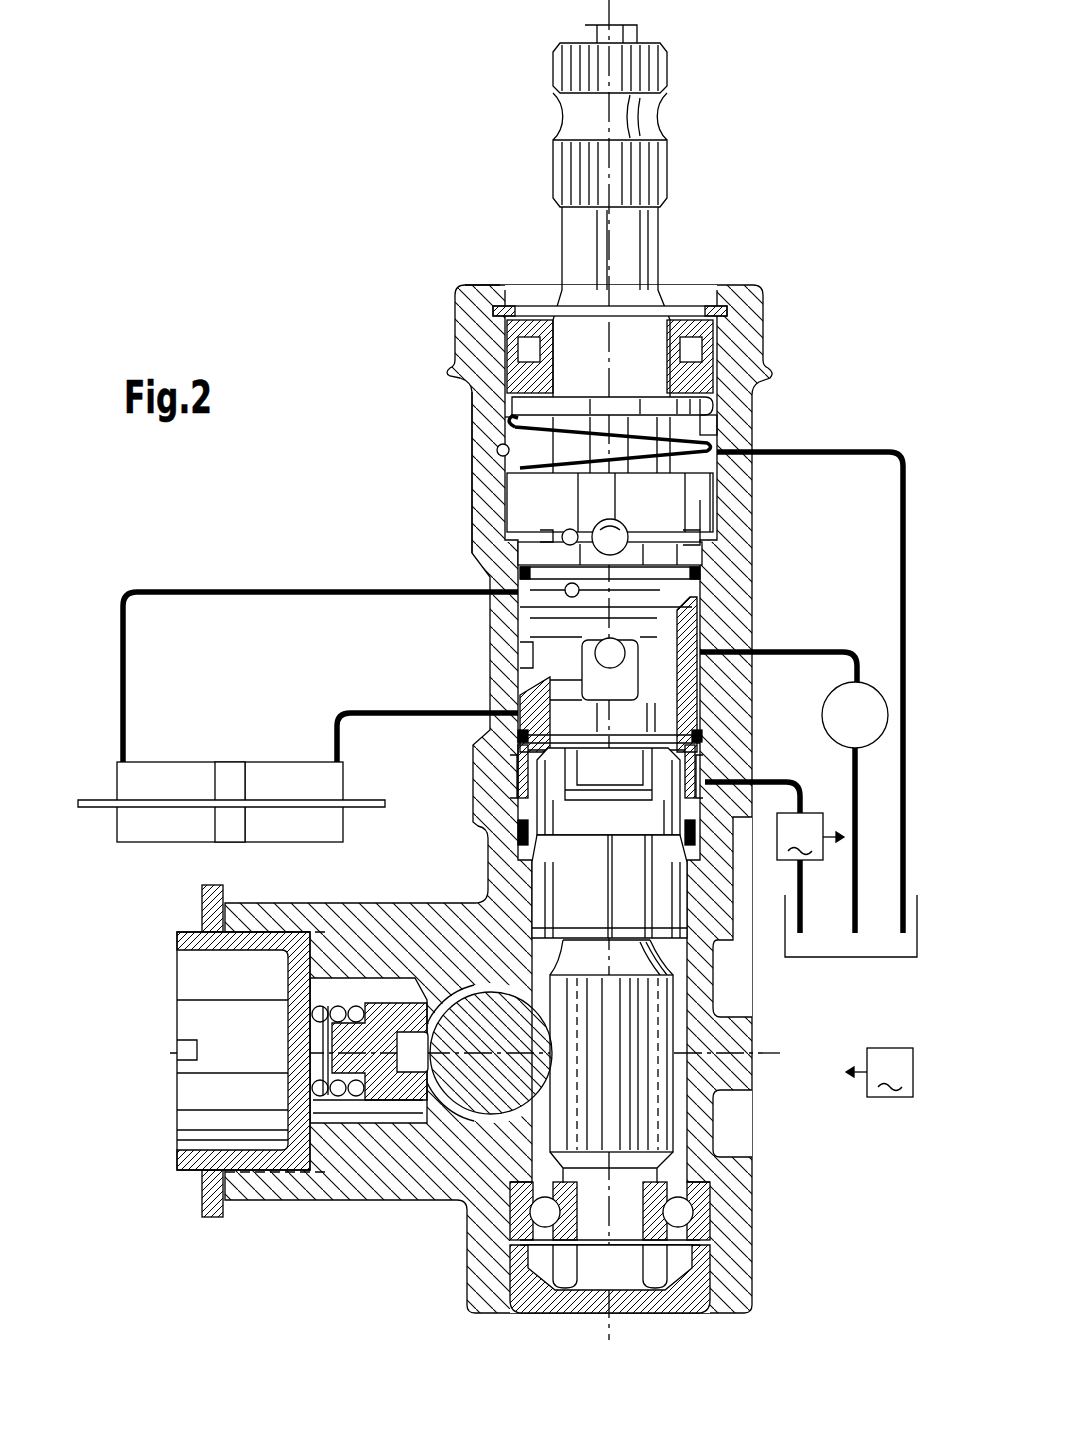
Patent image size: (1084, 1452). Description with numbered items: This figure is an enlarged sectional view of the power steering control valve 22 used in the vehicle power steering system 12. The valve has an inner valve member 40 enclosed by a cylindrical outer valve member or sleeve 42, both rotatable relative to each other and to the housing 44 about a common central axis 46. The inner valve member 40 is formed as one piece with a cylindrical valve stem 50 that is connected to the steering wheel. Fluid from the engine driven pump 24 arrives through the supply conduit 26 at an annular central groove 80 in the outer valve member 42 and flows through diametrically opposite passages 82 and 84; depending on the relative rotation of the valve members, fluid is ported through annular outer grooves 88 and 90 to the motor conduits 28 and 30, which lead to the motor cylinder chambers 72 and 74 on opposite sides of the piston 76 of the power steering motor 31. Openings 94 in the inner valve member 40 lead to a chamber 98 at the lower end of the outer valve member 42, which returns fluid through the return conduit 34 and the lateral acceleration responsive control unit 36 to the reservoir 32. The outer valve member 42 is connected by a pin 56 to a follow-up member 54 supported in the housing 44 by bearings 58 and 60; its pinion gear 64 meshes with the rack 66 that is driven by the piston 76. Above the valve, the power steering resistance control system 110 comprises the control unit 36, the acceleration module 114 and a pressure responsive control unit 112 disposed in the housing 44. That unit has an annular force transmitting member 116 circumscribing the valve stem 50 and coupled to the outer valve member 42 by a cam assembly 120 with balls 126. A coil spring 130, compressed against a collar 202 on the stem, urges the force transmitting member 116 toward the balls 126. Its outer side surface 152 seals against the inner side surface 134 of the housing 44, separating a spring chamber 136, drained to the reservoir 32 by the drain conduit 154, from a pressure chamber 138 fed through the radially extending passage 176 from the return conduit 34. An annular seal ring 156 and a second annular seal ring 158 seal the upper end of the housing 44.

The vehicle power steering system 12 is at (786, 189).
The power steering control valve 22 is at (441, 316).
The engine driven pump 24 is at (868, 690).
The supply conduit 26 is at (825, 650).
The motor conduit 28 is at (205, 590).
The motor conduit 30 is at (370, 712).
The power steering motor 31 is at (223, 758).
The reservoir 32 is at (845, 960).
The return conduit 34 is at (762, 843).
The lateral acceleration responsive control unit 36 is at (810, 836).
The inner valve member 40 is at (571, 714).
The outer valve member 42 is at (520, 657).
The housing 44 is at (478, 292).
The central axis 46 is at (607, 8).
The valve stem 50 is at (637, 120).
The follow-up member 54 is at (565, 852).
The pin 56 is at (530, 805).
The bearing 58 is at (540, 905).
The bearing 60 is at (683, 1212).
The pinion gear 64 is at (665, 1107).
The rack 66 is at (493, 1087).
The motor cylinder chamber 72 is at (150, 830).
The motor cylinder chamber 74 is at (290, 825).
The piston 76 is at (228, 818).
The annular central groove 80 is at (700, 640).
The passage 82 is at (610, 687).
The passage 84 is at (525, 640).
The annular outer groove 88 is at (520, 568).
The annular outer groove 90 is at (530, 700).
The openings 94 is at (604, 667).
The chamber 98 is at (703, 768).
The power steering resistance control system 110 is at (441, 377).
The pressure responsive control unit 112 is at (505, 430).
The acceleration module 114 is at (879, 1072).
The force transmitting member 116 is at (715, 486).
The cam assembly 120 is at (652, 512).
The balls 126 is at (637, 518).
The coil spring 130 is at (500, 420).
The inner side surface 134 is at (497, 450).
The spring chamber 136 is at (723, 432).
The pressure chamber 138 is at (720, 505).
The outer side surface 152 is at (515, 510).
The drain conduit 154 is at (893, 492).
The annular seal ring 156 is at (725, 355).
The second annular seal ring 158 is at (735, 330).
The radially extending passage 176 is at (568, 530).
The collar 202 is at (720, 407).